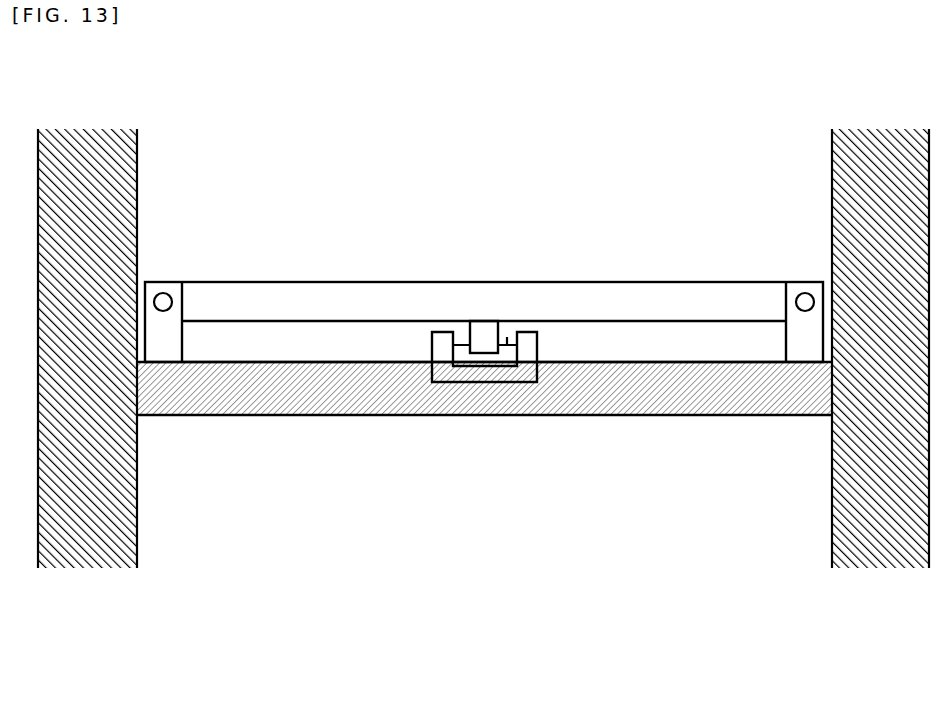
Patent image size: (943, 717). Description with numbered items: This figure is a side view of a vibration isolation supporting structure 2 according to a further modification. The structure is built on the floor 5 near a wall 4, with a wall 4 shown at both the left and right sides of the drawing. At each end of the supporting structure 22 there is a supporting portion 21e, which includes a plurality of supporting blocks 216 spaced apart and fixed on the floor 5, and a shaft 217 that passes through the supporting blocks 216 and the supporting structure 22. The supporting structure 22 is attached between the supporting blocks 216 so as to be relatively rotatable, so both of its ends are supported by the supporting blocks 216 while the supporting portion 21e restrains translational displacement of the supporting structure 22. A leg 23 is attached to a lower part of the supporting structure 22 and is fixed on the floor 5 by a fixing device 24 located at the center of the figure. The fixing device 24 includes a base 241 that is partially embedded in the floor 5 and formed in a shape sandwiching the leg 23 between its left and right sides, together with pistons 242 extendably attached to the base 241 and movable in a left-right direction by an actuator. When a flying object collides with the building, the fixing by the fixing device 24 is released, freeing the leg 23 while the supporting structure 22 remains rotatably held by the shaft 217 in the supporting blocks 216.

The vibration isolation supporting structure 2 is at (622, 276).
The wall 4 is at (83, 147).
The floor 5 is at (351, 406).
The supporting portion 21e is at (258, 192).
The supporting block 216 is at (173, 288).
The shaft 217 is at (163, 292).
The supporting structure 22 is at (333, 296).
The leg 23 is at (483, 332).
The fixing device 24 is at (493, 468).
The base 241 is at (445, 376).
The piston 242 is at (507, 382).